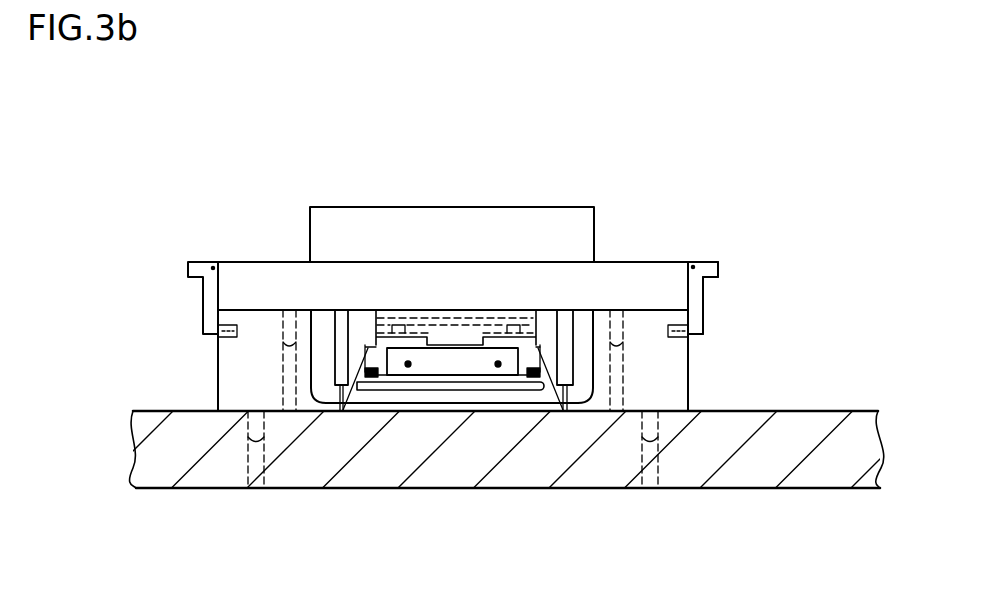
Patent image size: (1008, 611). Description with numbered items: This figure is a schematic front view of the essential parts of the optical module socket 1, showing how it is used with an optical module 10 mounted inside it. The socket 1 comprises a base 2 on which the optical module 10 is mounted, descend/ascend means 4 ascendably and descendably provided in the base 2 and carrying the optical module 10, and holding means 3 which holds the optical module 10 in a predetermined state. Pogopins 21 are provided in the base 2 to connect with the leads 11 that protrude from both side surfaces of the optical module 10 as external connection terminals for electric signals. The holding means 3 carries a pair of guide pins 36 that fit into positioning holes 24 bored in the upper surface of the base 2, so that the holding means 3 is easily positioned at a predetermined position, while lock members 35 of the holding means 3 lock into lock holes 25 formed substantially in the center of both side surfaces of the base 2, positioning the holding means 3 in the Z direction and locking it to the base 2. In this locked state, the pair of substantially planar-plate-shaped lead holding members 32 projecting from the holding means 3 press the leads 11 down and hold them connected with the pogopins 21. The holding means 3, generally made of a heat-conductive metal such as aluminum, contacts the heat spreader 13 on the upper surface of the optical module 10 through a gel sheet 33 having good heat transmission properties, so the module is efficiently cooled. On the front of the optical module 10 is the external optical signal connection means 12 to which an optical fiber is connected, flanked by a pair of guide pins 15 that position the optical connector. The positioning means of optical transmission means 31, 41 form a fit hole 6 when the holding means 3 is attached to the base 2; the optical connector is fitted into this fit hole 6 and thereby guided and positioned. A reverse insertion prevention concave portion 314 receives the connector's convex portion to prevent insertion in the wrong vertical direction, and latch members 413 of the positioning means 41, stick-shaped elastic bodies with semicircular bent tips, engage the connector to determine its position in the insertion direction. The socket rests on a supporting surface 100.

The optical module socket 1 is at (668, 148).
The base 2 is at (690, 402).
The holding means 3 is at (672, 262).
The descend/ascend means 4 is at (516, 390).
The fit hole 6 is at (337, 413).
The optical module 10 is at (443, 355).
The leads 11 is at (565, 356).
The external optical signal connection means 12 is at (453, 368).
The heat spreader 13 is at (397, 332).
The guide pins 15 is at (498, 366).
The pogopins 21 is at (573, 413).
The positioning holes 24 is at (283, 400).
The lock holes 25 is at (692, 350).
The positioning means of optical transmission means 31 is at (360, 352).
The lead holding members 32 is at (580, 337).
The gel sheet 33 is at (377, 324).
The lock members 35 is at (707, 300).
The guide pins 36 is at (618, 310).
The positioning means of optical transmission means 41 is at (362, 378).
The base 100 is at (817, 425).
The reverse insertion prevention concave portion 314 is at (480, 337).
The latch members 413 is at (537, 376).